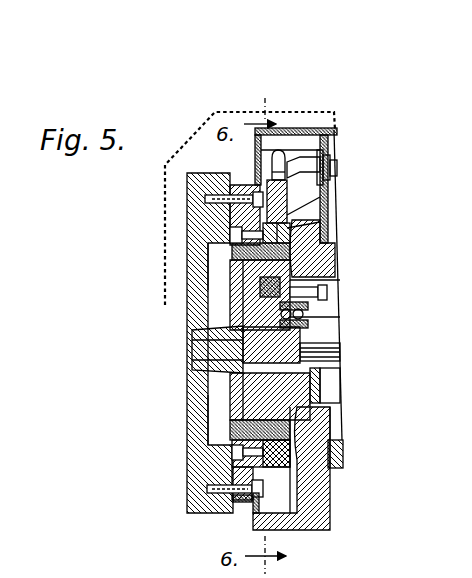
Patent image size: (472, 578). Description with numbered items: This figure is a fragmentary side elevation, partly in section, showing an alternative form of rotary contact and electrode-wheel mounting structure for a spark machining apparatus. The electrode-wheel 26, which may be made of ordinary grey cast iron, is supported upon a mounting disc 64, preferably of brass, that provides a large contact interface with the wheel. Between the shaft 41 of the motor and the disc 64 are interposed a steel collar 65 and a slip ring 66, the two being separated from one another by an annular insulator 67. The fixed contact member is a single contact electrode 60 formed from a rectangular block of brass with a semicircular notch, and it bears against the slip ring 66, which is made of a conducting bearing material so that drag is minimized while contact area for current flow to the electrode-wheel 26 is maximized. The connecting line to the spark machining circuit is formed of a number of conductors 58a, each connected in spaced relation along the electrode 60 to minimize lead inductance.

The electrode-wheel 26 is at (194, 415).
The shaft 41 is at (300, 346).
The conductors 58a is at (327, 153).
The contact electrode 60 is at (300, 218).
The mounting disc 64 is at (242, 502).
The steel collar 65 is at (240, 298).
The slip ring 66 is at (290, 243).
The annular insulator 67 is at (233, 257).